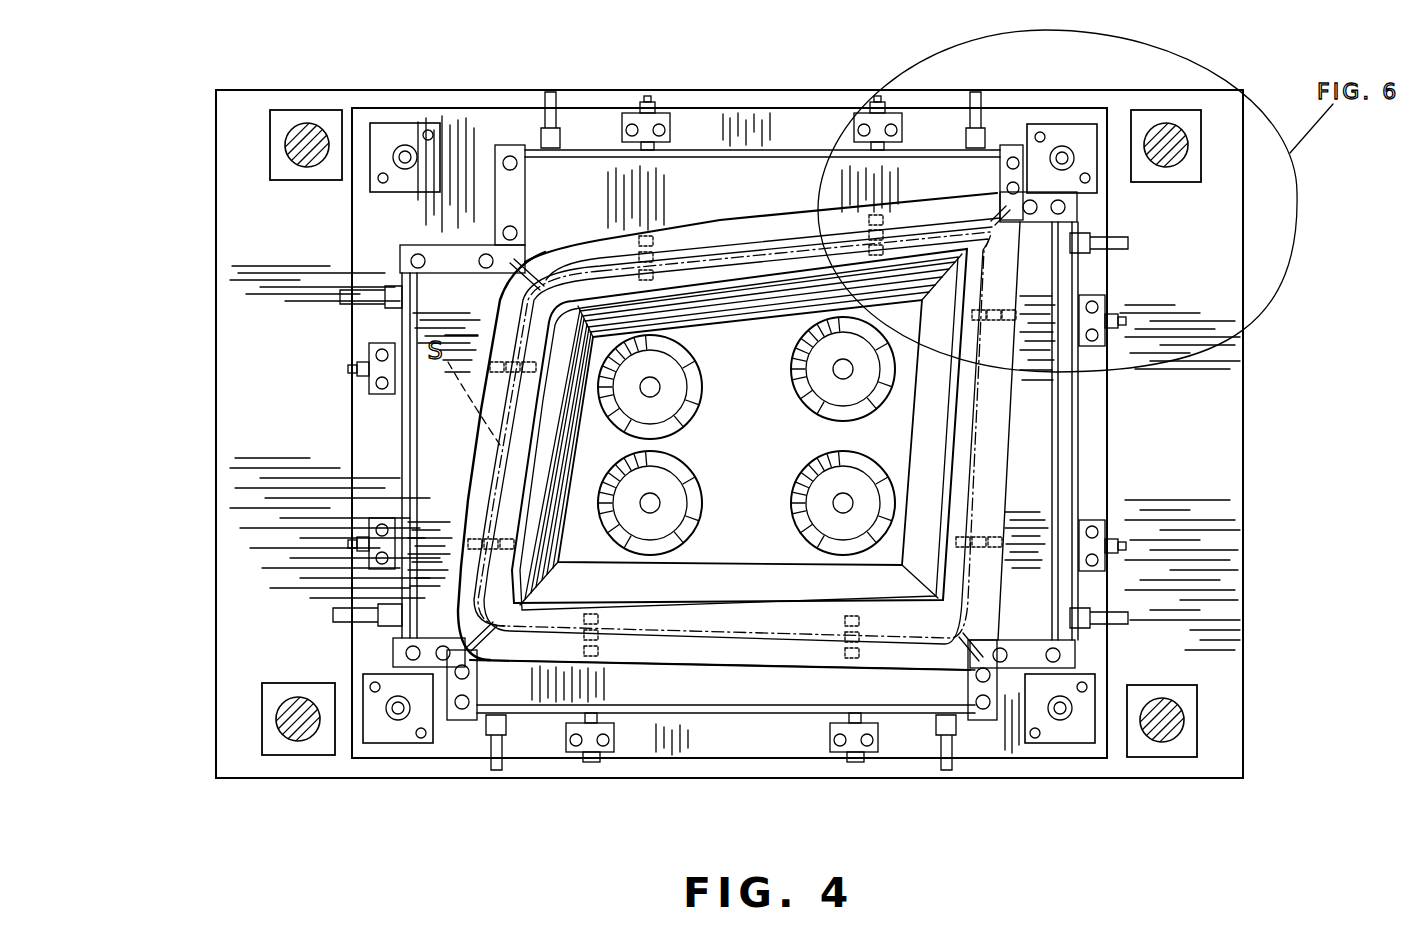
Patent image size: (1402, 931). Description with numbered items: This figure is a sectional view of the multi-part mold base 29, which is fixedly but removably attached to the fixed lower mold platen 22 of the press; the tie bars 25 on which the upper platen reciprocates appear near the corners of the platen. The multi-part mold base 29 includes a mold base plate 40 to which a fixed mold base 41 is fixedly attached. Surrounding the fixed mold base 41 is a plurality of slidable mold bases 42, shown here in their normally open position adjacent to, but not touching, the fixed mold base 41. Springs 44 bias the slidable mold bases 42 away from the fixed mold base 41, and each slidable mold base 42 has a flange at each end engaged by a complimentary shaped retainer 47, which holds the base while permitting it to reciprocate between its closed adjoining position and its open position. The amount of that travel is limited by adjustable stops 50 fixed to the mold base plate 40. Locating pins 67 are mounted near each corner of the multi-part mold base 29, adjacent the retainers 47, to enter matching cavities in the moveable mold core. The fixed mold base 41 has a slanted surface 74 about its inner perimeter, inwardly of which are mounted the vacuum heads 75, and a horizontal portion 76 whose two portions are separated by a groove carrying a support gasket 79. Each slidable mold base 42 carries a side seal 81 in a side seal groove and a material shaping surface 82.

The fixed lower mold platen 22 is at (219, 510).
The tie bars 25 is at (305, 143).
The multi-part mold base 29 is at (346, 263).
The mold base plate 40 is at (1107, 405).
The fixed mold base 41 is at (722, 496).
The slidable mold bases 42 is at (762, 175).
The springs 44 is at (645, 226).
The retainer 47 is at (508, 155).
The adjustable stops 50 is at (640, 113).
The locating pin 67 is at (405, 150).
The slanted surface 74 is at (703, 310).
The vacuum heads 75 is at (692, 412).
The horizontal portion 76 is at (673, 655).
The support gasket 79 is at (795, 285).
The side seal 81 is at (734, 250).
The material shaping surface 82 is at (713, 642).